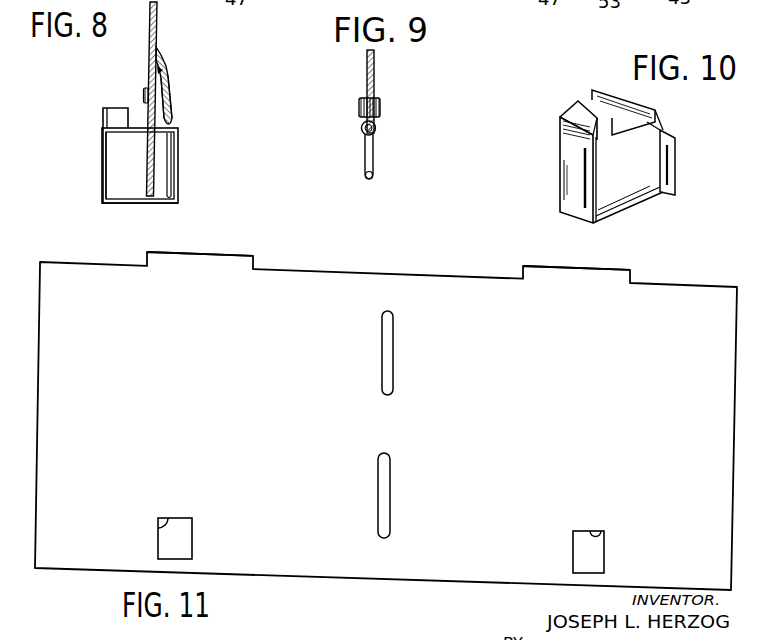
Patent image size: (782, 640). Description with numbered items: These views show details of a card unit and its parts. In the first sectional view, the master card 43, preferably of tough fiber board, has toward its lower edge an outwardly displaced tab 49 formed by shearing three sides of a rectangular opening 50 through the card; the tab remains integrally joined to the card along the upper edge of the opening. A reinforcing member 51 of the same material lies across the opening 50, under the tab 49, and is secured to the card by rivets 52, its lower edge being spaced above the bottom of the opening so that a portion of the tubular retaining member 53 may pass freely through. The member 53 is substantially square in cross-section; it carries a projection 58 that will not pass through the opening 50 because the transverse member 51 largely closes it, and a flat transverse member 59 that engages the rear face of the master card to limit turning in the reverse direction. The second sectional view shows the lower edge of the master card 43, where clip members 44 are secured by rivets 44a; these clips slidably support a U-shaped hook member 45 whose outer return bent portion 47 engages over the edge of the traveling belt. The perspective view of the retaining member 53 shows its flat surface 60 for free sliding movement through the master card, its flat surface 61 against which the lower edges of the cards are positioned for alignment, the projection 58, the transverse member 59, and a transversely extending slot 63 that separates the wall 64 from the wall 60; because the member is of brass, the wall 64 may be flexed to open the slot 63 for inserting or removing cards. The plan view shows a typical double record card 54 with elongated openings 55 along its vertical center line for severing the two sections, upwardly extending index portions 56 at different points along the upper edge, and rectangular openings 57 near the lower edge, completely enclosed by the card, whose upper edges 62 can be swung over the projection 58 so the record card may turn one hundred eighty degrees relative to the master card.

In FIG. 8, the master card 43 is at (157, 21).
In FIG. 9, the master card 43 is at (375, 66).
In FIG. 9, the clip members 44 is at (376, 124).
In FIG. 9, the rivets 44a is at (381, 107).
In FIG. 9, the U-shaped hook members 45 is at (374, 150).
In FIG. 9, the outer return bent portions 47 is at (365, 175).
In FIG. 8, the tab 49 is at (171, 94).
In FIG. 8, the rectangular opening 50 is at (152, 68).
In FIG. 8, the member 51 is at (156, 82).
In FIG. 8, the rivets 52 is at (143, 96).
In FIG. 8, the tubular retaining member 53 is at (98, 176).
In FIG. 10, the tubular retaining member 53 is at (552, 206).
In FIG. 11, the record card 54 is at (394, 266).
In FIG. 11, the elongated openings 55 is at (394, 348).
In FIG. 11, the index portion 56 is at (222, 258).
In FIG. 11, the rectangular opening 57 is at (188, 541).
In FIG. 8, the projection 58 is at (108, 118).
In FIG. 10, the projection 58 is at (577, 108).
In FIG. 8, the flat transverse member 59 is at (173, 165).
In FIG. 10, the flat transverse member 59 is at (673, 163).
In FIG. 10, the flat surface 60 is at (637, 113).
In FIG. 8, the flat surface 61 is at (122, 204).
In FIG. 10, the flat surface 61 is at (627, 192).
In FIG. 11, the upper edges 62 is at (160, 525).
In FIG. 8, the slot 63 is at (106, 133).
In FIG. 10, the slot 63 is at (570, 148).
In FIG. 8, the wall 64 is at (103, 155).
In FIG. 10, the wall 64 is at (568, 175).